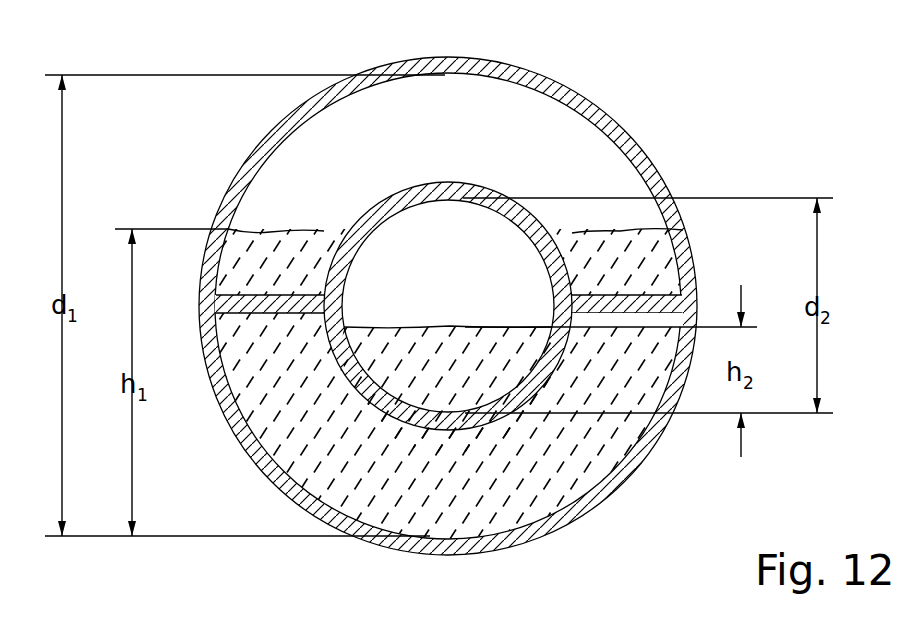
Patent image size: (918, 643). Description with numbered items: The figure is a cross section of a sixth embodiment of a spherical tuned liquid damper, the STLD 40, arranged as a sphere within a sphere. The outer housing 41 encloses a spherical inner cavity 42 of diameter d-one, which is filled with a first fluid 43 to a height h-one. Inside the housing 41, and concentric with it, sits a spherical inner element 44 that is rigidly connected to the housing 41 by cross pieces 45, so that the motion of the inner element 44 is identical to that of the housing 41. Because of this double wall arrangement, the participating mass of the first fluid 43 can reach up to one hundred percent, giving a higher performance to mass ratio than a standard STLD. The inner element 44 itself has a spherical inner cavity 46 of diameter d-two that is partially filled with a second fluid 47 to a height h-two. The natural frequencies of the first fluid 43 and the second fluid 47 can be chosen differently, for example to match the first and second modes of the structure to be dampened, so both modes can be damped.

The spherical tuned liquid damper 40 is at (712, 42).
The housing 41 is at (535, 69).
The spherical inner cavity 42 is at (276, 147).
The first fluid 43 is at (312, 432).
The spherical inner element 44 is at (385, 188).
The cross pieces 45 is at (596, 297).
The spherical inner cavity of the inner element 46 is at (377, 243).
The second fluid 47 is at (445, 382).